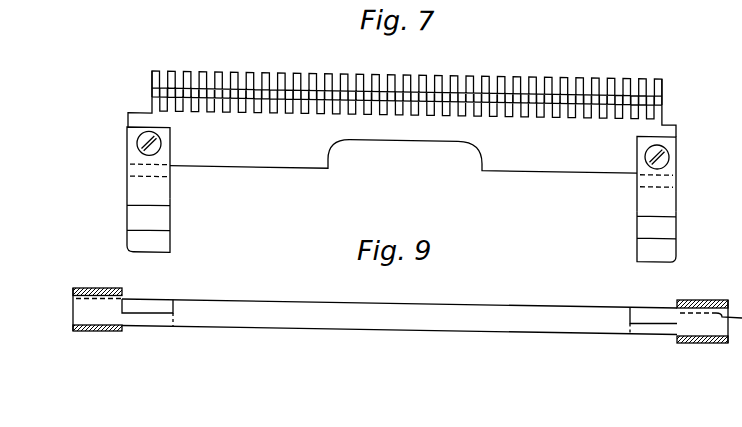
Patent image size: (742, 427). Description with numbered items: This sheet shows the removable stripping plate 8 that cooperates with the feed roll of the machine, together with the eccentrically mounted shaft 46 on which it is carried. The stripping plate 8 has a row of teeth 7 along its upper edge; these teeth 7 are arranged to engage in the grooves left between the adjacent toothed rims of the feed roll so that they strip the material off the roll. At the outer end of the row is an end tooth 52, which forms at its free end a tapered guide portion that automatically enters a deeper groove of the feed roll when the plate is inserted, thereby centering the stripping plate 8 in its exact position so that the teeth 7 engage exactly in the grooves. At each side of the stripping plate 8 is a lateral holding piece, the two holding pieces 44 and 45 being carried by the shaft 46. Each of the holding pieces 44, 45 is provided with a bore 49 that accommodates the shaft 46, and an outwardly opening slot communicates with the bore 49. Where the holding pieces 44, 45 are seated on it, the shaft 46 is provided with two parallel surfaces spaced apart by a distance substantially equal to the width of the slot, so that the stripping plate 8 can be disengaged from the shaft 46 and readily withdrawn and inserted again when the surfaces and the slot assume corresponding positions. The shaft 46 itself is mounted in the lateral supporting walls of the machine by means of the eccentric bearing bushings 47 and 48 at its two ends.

In FIG. 7, the teeth 7 is at (343, 69).
In FIG. 7, the stripping plate 8 is at (258, 153).
In FIG. 7, the lateral holding piece 44 is at (137, 215).
In FIG. 7, the lateral holding piece 45 is at (643, 237).
In FIG. 9, the shaft 46 is at (310, 299).
In FIG. 9, the eccentric bearing bushing 47 is at (104, 288).
In FIG. 9, the eccentric bearing bushing 48 is at (702, 300).
In FIG. 7, the bore 49 is at (137, 182).
In FIG. 9, the bore 49 is at (75, 293).
In FIG. 7, the end tooth 52 is at (402, 84).